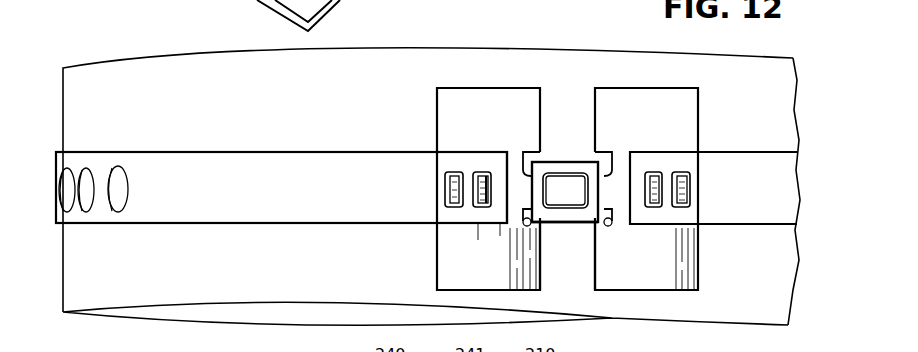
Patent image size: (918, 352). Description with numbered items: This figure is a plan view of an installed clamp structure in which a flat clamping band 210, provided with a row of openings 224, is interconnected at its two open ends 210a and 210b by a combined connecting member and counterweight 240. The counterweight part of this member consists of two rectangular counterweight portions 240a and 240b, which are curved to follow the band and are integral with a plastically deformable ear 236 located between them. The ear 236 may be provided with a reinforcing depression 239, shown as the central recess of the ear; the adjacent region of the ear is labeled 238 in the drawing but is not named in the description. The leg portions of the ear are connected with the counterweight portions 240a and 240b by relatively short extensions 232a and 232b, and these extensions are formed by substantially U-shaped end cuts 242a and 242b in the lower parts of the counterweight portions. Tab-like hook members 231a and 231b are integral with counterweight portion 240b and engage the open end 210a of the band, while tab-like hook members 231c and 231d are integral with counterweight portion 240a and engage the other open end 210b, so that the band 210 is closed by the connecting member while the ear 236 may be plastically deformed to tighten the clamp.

The flat clamping band 210 is at (205, 126).
The open end of clamping band 210a is at (466, 160).
The open end of clamping band 210b is at (665, 160).
The openings 224 is at (114, 203).
The tab-like hook member 231a is at (447, 190).
The tab-like hook member 231b is at (484, 208).
The tab-like hook member 231c is at (690, 186).
The tab-like hook member 231d is at (651, 207).
The extension 232a is at (516, 172).
The extension 232b is at (616, 172).
The plastically deformable ear 236 is at (576, 126).
The connector block base 238 is at (566, 222).
The reinforcing depression 239 is at (572, 183).
The combined connecting member and counterweight 240 is at (571, 156).
The counterweight portion 240a is at (693, 108).
The counterweight portion 240b is at (443, 104).
The U-shaped end cut 242a is at (530, 222).
The U-shaped end cut 242b is at (604, 221).